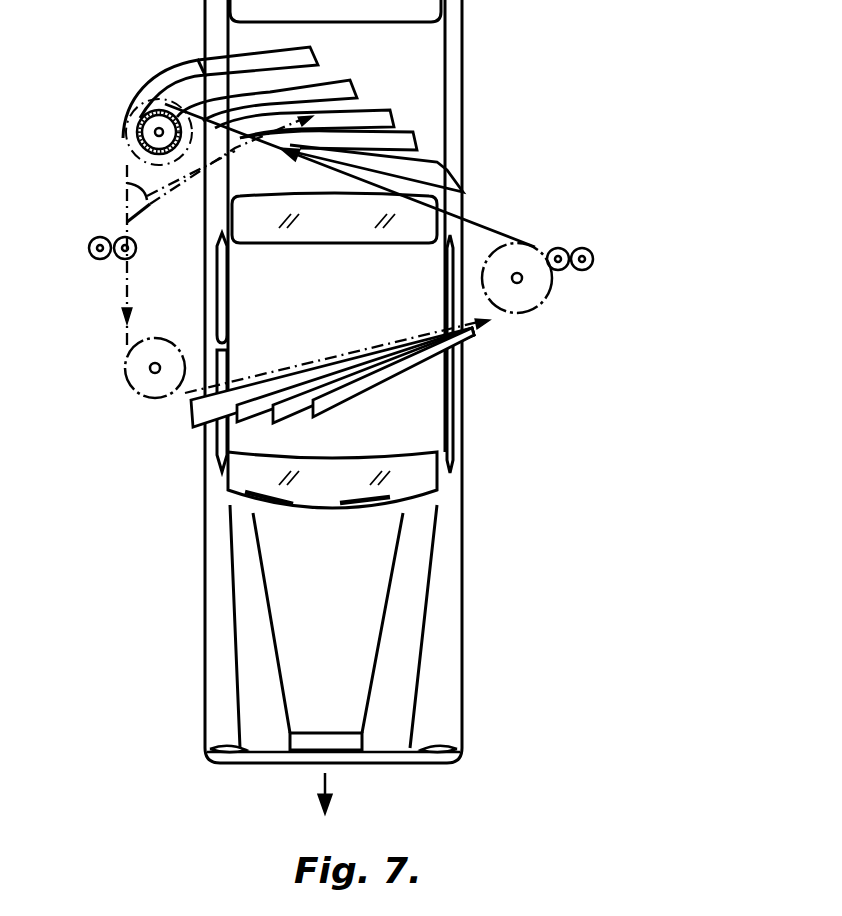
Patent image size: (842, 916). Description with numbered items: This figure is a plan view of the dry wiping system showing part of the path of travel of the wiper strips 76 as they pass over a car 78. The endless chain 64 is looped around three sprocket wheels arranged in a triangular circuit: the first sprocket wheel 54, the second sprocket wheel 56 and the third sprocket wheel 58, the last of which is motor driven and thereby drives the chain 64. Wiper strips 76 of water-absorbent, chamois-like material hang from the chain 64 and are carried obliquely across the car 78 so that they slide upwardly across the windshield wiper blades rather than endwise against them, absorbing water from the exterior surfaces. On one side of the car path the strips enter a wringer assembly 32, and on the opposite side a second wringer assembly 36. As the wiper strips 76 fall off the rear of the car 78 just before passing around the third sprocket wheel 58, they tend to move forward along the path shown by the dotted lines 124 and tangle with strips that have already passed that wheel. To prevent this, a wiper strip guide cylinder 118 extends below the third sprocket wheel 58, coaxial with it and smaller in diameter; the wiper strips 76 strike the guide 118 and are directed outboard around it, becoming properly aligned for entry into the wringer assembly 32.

The wringer assembly 32 is at (94, 260).
The second wringer assembly 36 is at (596, 251).
The first sprocket wheel 54 is at (533, 296).
The second sprocket wheel 56 is at (143, 382).
The third sprocket wheel 58 is at (122, 135).
The endless chain 64 is at (500, 225).
The wiper strip 76 is at (433, 158).
The car 78 is at (448, 596).
The wiper strip guide cylinder 118 is at (166, 108).
The dotted lines 124 is at (127, 187).